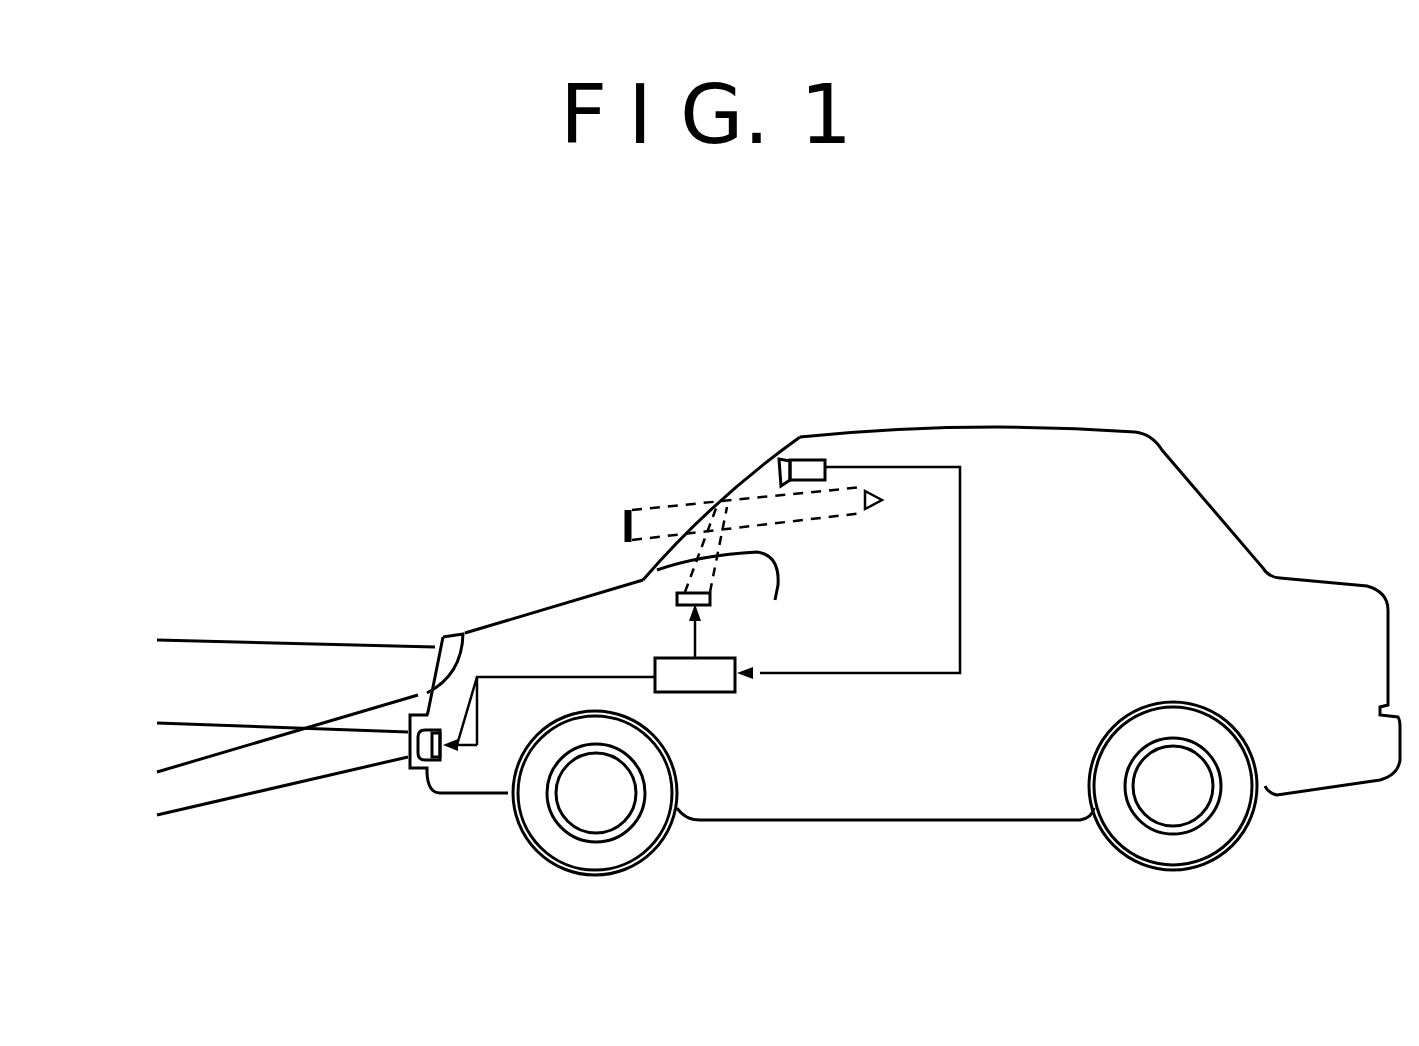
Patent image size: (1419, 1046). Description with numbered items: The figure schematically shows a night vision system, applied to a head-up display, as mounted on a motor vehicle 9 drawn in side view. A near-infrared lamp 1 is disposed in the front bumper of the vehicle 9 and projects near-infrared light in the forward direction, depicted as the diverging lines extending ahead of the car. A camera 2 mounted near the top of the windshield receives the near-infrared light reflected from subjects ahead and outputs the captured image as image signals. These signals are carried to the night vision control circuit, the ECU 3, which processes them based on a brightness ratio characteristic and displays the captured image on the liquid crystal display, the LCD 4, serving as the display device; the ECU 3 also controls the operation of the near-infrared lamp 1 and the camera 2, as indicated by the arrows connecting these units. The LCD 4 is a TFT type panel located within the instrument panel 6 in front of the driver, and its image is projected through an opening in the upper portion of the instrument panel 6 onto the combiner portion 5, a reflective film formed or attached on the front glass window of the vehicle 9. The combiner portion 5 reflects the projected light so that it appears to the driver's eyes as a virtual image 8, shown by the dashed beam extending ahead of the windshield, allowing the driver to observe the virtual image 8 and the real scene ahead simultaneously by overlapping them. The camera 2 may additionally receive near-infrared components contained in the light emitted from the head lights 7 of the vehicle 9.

The near-infrared lamp 1 is at (452, 798).
The camera 2 is at (805, 460).
The night vision control circuit (ECU) 3 is at (708, 692).
The liquid crystal display (LCD) 4 is at (710, 600).
The combiner portion 5 is at (712, 512).
The instrument panel 6 is at (777, 567).
The head lights 7 is at (465, 633).
The virtual image 8 is at (622, 527).
The vehicle 9 is at (1030, 430).